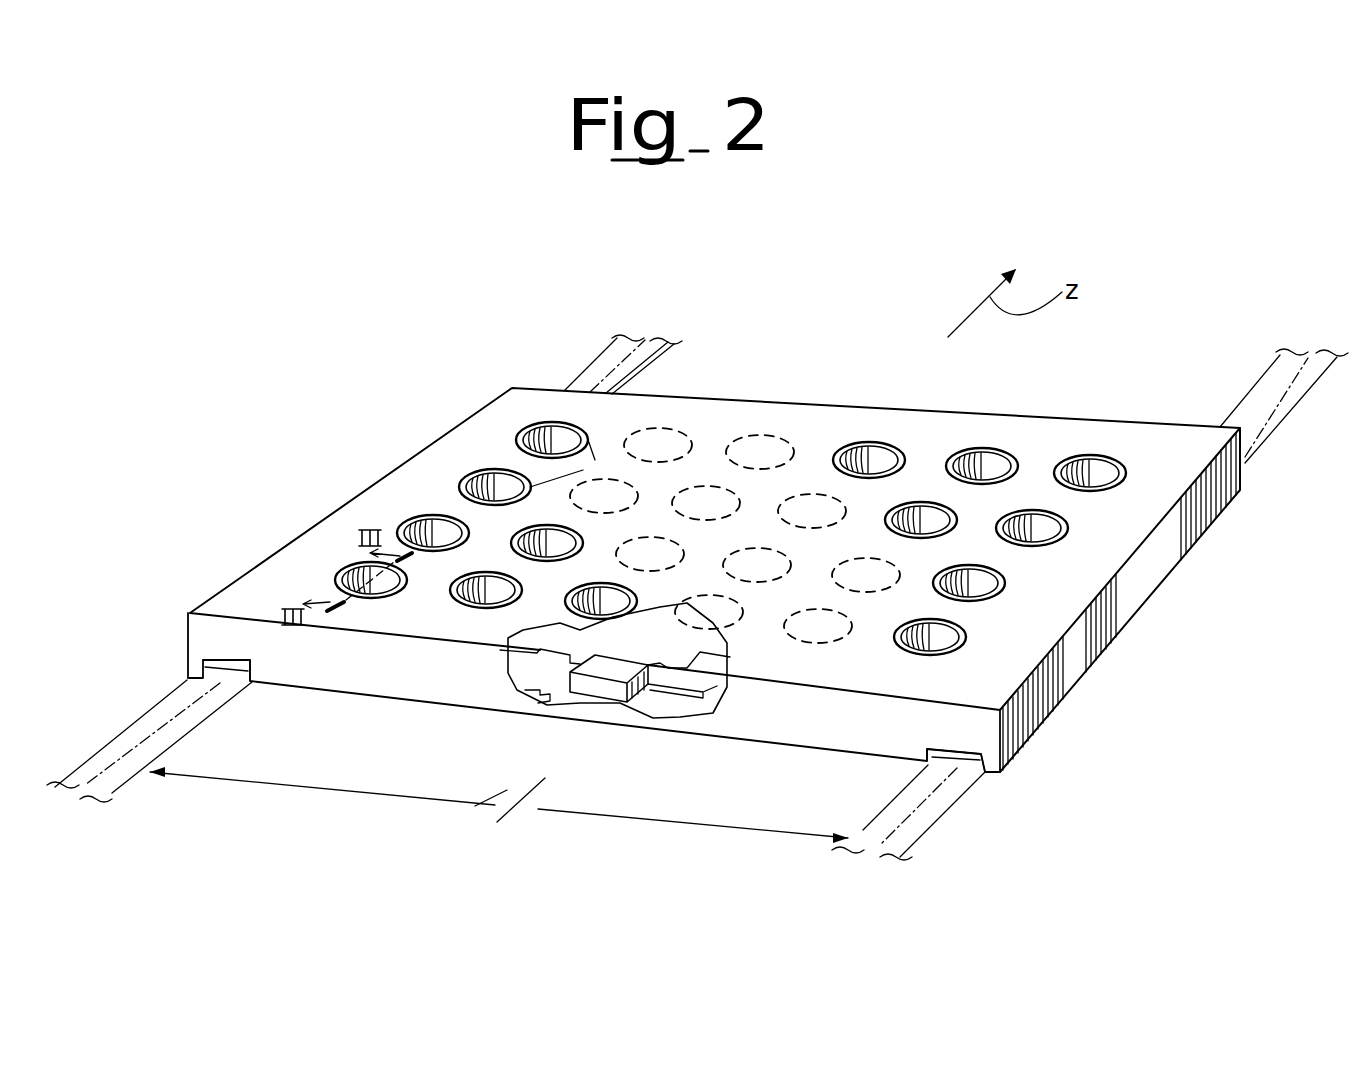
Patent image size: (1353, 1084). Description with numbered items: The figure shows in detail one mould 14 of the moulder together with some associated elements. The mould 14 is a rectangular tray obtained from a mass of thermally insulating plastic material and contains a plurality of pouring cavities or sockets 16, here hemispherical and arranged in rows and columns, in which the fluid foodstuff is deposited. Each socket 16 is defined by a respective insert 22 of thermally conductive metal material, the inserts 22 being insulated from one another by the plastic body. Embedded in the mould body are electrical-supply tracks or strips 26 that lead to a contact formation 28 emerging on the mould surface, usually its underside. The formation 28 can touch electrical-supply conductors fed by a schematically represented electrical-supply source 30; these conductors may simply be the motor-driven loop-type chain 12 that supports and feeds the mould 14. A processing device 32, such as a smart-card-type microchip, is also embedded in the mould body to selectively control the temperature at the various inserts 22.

The motor-driven loop-type chain 12 is at (137, 729).
The mould 14 is at (908, 385).
The pouring cavity or socket 16 is at (543, 428).
The insert 22 is at (962, 452).
The electrical-supply track or strip 26 is at (545, 683).
The contact formation 28 is at (257, 663).
The electrical-supply source 30 is at (478, 806).
The processing device 32 is at (607, 697).